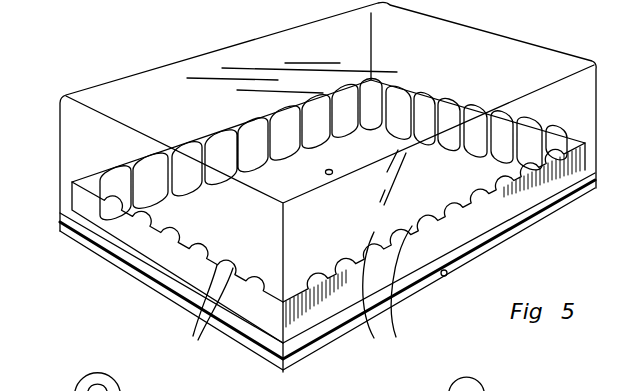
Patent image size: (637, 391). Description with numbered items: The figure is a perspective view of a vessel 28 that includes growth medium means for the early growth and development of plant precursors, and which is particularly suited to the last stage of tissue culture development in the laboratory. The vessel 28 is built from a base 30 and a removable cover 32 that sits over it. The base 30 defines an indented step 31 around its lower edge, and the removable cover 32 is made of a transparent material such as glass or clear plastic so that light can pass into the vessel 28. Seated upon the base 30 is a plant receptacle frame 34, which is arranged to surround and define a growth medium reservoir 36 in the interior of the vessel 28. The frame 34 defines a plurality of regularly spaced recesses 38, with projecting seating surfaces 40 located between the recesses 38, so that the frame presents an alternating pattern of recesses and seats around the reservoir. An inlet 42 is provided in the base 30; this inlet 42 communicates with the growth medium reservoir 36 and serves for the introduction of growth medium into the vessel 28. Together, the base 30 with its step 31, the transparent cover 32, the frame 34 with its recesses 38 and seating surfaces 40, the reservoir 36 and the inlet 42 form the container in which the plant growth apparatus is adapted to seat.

The vessel 28 is at (509, 251).
The base 30 is at (100, 248).
The indented step 31 is at (157, 271).
The removable cover 32 is at (60, 152).
The plant receptacle frame 34 is at (393, 88).
The growth medium reservoir 36 is at (338, 227).
The recesses 38 is at (387, 292).
The projecting seating surfaces 40 is at (195, 303).
The inlet 42 is at (452, 268).